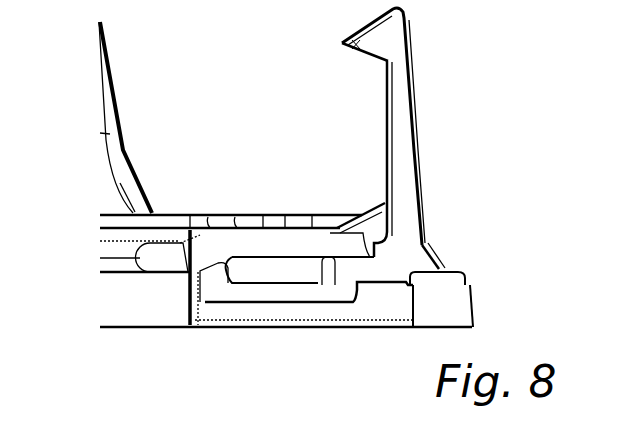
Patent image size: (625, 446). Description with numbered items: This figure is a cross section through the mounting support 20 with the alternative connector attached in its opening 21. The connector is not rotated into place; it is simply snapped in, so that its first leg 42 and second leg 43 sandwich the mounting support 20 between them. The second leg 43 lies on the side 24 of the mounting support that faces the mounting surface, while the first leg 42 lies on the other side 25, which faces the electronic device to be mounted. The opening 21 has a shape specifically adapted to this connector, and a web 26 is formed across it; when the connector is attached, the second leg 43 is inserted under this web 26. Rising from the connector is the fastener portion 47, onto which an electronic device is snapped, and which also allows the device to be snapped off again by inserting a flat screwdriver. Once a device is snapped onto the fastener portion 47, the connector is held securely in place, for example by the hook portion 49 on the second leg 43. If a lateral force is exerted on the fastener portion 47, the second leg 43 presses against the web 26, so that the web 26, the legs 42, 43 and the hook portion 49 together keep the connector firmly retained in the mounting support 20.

The mounting support 20 is at (115, 243).
The opening 21 is at (272, 313).
The side 24 is at (123, 327).
The other side 25 is at (292, 216).
The web 26 is at (285, 258).
The first leg 42 is at (228, 240).
The second leg 43 is at (310, 295).
The fastener portion 47 is at (418, 28).
The hook portion 49 is at (226, 265).